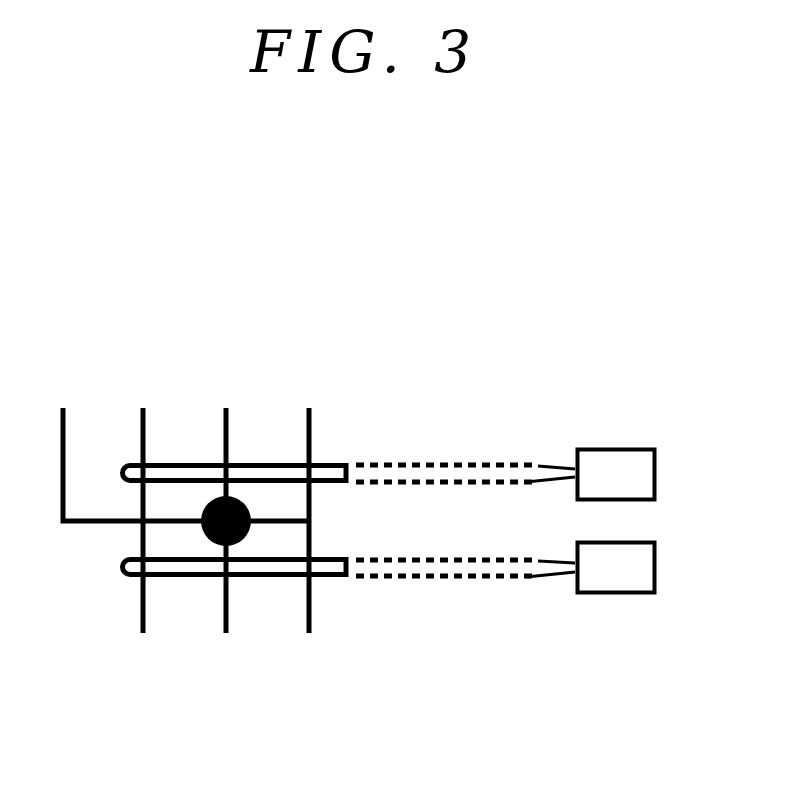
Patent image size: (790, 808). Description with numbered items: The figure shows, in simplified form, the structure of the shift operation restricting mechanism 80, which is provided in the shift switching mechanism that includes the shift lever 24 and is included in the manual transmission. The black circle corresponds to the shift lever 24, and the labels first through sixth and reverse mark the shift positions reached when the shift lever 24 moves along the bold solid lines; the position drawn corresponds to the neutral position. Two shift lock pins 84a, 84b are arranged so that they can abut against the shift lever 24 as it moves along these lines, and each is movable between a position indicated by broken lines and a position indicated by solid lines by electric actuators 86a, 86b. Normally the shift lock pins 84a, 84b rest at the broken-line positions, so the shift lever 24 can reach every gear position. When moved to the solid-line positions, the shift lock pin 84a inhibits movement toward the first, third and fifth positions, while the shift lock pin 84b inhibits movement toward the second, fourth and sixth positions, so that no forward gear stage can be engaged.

The shift operation restricting mechanism 80 is at (538, 339).
The shift lock pin 84a is at (178, 472).
The shift lock pin 84b is at (177, 571).
The shift lever 24 is at (240, 500).
The electric actuator 86a is at (608, 465).
The electric actuator 86b is at (600, 580).